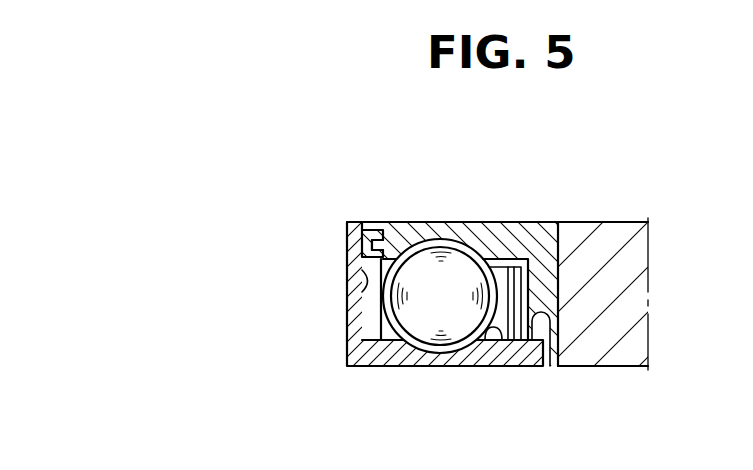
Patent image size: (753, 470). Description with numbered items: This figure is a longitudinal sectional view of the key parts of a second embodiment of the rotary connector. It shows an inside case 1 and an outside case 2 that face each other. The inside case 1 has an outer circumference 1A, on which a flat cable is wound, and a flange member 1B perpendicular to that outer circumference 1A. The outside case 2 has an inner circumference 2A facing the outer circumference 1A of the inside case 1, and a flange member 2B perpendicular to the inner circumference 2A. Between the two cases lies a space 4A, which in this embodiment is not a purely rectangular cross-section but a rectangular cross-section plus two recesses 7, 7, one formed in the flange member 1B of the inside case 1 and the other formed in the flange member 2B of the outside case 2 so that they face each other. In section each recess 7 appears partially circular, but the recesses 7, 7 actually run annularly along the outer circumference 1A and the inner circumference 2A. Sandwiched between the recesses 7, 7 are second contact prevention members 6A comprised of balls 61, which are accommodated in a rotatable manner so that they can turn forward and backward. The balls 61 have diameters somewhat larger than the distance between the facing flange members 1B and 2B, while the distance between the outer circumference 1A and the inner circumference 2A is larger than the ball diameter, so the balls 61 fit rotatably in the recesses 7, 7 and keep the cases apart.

The inside case 1 is at (412, 222).
The outer circumference 1A is at (551, 362).
The flange member 1B is at (363, 220).
The outside case 2 is at (350, 309).
The inner circumference 2A is at (362, 280).
The flange member 2B is at (496, 343).
The space 4A is at (620, 240).
The contact prevention member 6A is at (460, 278).
The ball 61 is at (511, 303).
The recess 7 is at (447, 222).